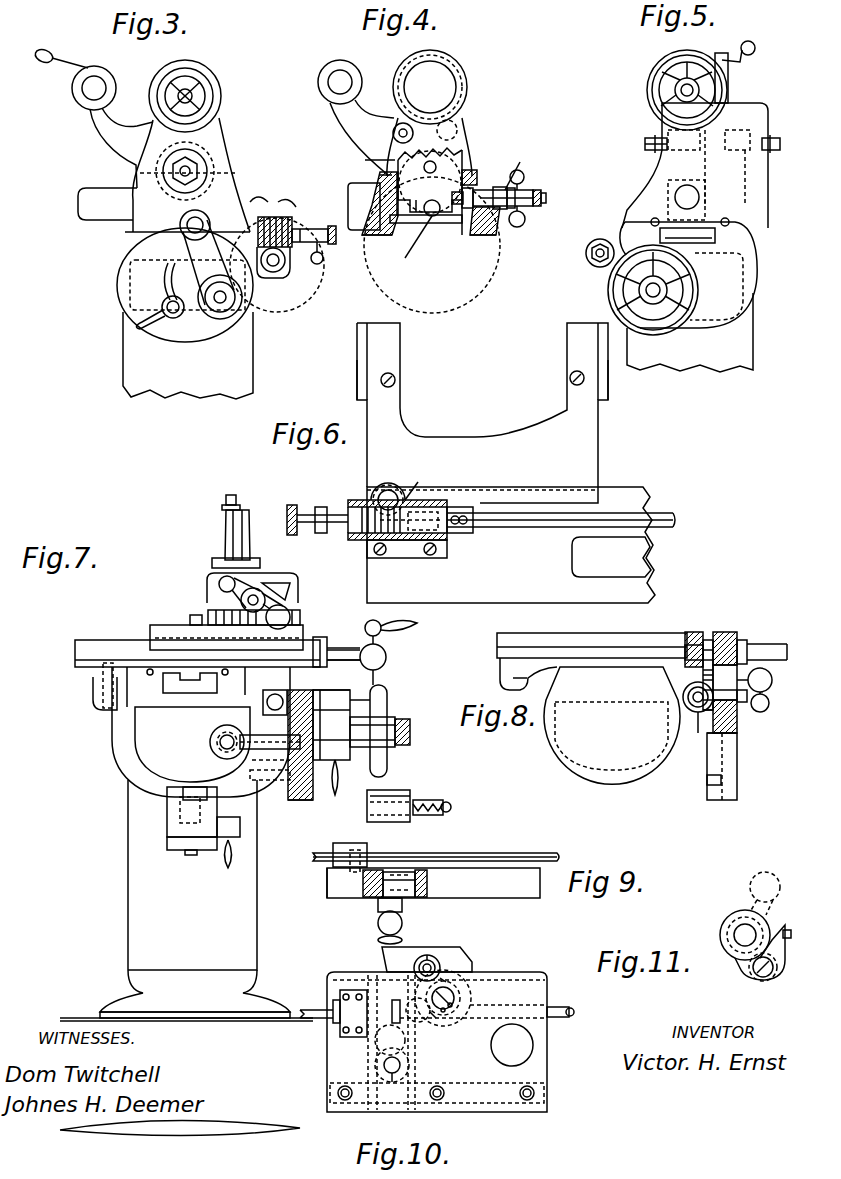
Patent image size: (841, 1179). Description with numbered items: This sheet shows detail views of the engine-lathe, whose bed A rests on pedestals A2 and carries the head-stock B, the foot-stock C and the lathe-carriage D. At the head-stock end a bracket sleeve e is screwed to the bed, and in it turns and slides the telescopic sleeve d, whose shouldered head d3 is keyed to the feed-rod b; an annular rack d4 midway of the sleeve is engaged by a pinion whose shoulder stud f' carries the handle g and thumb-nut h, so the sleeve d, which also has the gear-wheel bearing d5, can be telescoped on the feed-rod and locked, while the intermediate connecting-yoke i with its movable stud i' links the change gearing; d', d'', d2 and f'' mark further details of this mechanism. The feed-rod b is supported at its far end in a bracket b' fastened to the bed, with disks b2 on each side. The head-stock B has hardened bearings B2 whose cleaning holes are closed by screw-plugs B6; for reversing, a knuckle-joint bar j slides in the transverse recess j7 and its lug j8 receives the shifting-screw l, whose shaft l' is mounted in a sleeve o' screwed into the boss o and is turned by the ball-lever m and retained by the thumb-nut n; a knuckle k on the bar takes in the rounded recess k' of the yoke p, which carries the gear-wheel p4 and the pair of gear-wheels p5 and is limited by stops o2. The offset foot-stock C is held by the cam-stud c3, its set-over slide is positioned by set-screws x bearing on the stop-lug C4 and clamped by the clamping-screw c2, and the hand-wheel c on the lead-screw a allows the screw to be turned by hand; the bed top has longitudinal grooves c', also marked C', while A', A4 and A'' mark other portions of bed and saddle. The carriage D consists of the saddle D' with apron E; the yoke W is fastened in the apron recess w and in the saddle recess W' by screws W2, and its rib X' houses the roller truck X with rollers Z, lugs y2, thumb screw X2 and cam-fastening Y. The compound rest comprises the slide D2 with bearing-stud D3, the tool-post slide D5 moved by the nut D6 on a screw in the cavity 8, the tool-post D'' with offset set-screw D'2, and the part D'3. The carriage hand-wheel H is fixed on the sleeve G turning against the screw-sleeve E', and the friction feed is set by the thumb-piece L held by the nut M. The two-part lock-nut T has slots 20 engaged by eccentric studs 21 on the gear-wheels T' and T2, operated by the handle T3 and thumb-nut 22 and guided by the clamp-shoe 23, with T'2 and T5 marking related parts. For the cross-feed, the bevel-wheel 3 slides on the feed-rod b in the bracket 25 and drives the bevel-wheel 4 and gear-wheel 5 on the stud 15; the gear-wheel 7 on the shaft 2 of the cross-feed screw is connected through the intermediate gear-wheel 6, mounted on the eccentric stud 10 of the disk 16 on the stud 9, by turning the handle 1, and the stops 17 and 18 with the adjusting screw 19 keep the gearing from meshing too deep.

In FIG. 3, the head-stock B is at (226, 142).
In FIG. 4, the head-stock B is at (462, 132).
In FIG. 6, the head-stock B is at (482, 413).
In FIG. 8, the head-stock B is at (695, 632).
In FIG. 3, the bed A is at (185, 313).
In FIG. 5, the bed A is at (688, 297).
In FIG. 6, the bed A is at (511, 545).
In FIG. 7, the bed A is at (201, 732).
In FIG. 8, the bed A is at (612, 725).
In FIG. 3, the movable stud i' is at (190, 253).
In FIG. 3, the adjustable intermediate connecting-yoke i is at (189, 296).
In FIG. 3, the bracket sleeve e is at (277, 255).
In FIG. 6, the bracket sleeve e is at (407, 548).
In FIG. 3, the feed-rod b is at (280, 269).
In FIG. 6, the feed-rod b is at (563, 506).
In FIG. 8, the feed-rod b is at (689, 738).
In FIG. 9, the feed-rod b is at (436, 843).
In FIG. 10, the feed-rod b is at (437, 1000).
In FIG. 3, the shoulder-bearing stud f' is at (259, 193).
In FIG. 3, the pawl f'' is at (286, 192).
In FIG. 3, the handle g is at (312, 229).
In FIG. 3, the thumb-nut h is at (324, 232).
In FIG. 4, the screw-plug B6 is at (462, 72).
In FIG. 6, the screw-plug B6 is at (396, 380).
In FIG. 4, the knuckle-joint bar j is at (405, 225).
In FIG. 4, the transverse recess j7 is at (372, 228).
In FIG. 4, the arm or lug j8 is at (478, 232).
In FIG. 4, the yoke p is at (430, 182).
In FIG. 4, the gear-wheels p5 is at (390, 130).
In FIG. 4, the gear-wheel p4 is at (369, 154).
In FIG. 4, the stop o2 is at (476, 158).
In FIG. 4, the shifting-screw l is at (492, 175).
In FIG. 4, the shaft of screw l' is at (516, 163).
In FIG. 4, the ball-lever m is at (524, 176).
In FIG. 4, the thumb-nut n is at (546, 196).
In FIG. 4, the boss o is at (507, 185).
In FIG. 4, the sleeve o' is at (512, 219).
In FIG. 4, the knuckle k is at (417, 245).
In FIG. 4, the transverse recess k' is at (401, 238).
In FIG. 4, the anti-friction bearings B2 is at (358, 320).
In FIG. 6, the anti-friction bearings B2 is at (358, 326).
In FIG. 5, the cam-stud c3 is at (701, 85).
In FIG. 5, the foot-stock C is at (695, 165).
In FIG. 5, the stop-lug C4 is at (700, 165).
In FIG. 5, the set-screws x is at (711, 134).
In FIG. 5, the longitudinal grooves c' is at (689, 212).
In FIG. 5, the clamping-screw c2 is at (687, 233).
In FIG. 5, the hand-wheel c is at (642, 290).
In FIG. 5, the bracket b' is at (589, 252).
In FIG. 6, the bed A' is at (611, 557).
In FIG. 7, the bed A' is at (343, 639).
In FIG. 8, the bed A' is at (755, 637).
In FIG. 6, the annular rack d4 is at (358, 500).
In FIG. 6, the telescopic sleeve d is at (331, 533).
In FIG. 6, the gear-wheel bearing d5 is at (312, 510).
In FIG. 6, the roller d'' is at (388, 487).
In FIG. 6, the cap d' is at (417, 481).
In FIG. 6, the shouldered head d3 is at (470, 533).
In FIG. 6, the slot d2 is at (430, 530).
In FIG. 7, the offset set-screw D'2 is at (212, 497).
In FIG. 7, the tool-post D'' is at (223, 535).
In FIG. 7, the tool-post slide D5 is at (213, 578).
In FIG. 7, the nut D6 is at (298, 590).
In FIG. 7, the sleeve G is at (300, 615).
In FIG. 7, the bearing-stud D3 is at (188, 610).
In FIG. 7, the slide D2 is at (150, 632).
In FIG. 7, the slide D'3 is at (197, 636).
In FIG. 7, the saddle D' is at (183, 652).
In FIG. 8, the saddle D' is at (578, 645).
In FIG. 10, the saddle D' is at (455, 957).
In FIG. 7, the screws W2 is at (103, 668).
In FIG. 7, the recess W' is at (72, 693).
In FIG. 8, the recess W' is at (509, 675).
In FIG. 7, the rib A4 is at (128, 683).
In FIG. 7, the longitudinal grooves C' is at (192, 674).
In FIG. 7, the rib A'' is at (254, 678).
In FIG. 7, the disks b2 is at (263, 702).
In FIG. 7, the lock-nut T is at (239, 740).
In FIG. 7, the transverse recess 20 is at (265, 768).
In FIG. 9, the transverse recess 20 is at (395, 870).
In FIG. 7, the eccentric studs 21 is at (271, 766).
In FIG. 9, the eccentric studs 21 is at (420, 870).
In FIG. 7, the yoke W is at (166, 844).
In FIG. 7, the rollers Z is at (207, 795).
In FIG. 7, the pedestals A2 is at (186, 900).
In FIG. 7, the truck X is at (177, 812).
In FIG. 7, the rib X' is at (174, 821).
In FIG. 7, the screw X2 is at (183, 852).
In FIG. 7, the cam-fastening Y is at (233, 827).
In FIG. 7, the lugs y2 is at (218, 858).
In FIG. 7, the bearing T'2 is at (313, 757).
In FIG. 7, the apron E is at (309, 756).
In FIG. 8, the apron E is at (732, 734).
In FIG. 9, the apron E is at (433, 883).
In FIG. 10, the apron E is at (450, 1042).
In FIG. 7, the lathe-carriage D is at (300, 808).
In FIG. 8, the lathe-carriage D is at (737, 766).
In FIG. 7, the gear-wheel T' is at (331, 677).
In FIG. 9, the gear-wheel T' is at (386, 854).
In FIG. 10, the gear-wheel T' is at (375, 1040).
In FIG. 7, the screw-sleeve E' is at (352, 692).
In FIG. 7, the hand-wheel H is at (387, 700).
In FIG. 7, the thumb-piece L is at (387, 760).
In FIG. 7, the nut M is at (410, 730).
In FIG. 7, the handle T3 is at (340, 770).
In FIG. 9, the handle T3 is at (378, 930).
In FIG. 8, the gear-wheel 7 is at (720, 632).
In FIG. 8, the shaft 2 is at (787, 650).
In FIG. 10, the shaft 2 is at (414, 965).
In FIG. 8, the handle 1 is at (772, 677).
In FIG. 11, the handle 1 is at (770, 880).
In FIG. 8, the stud 15 is at (765, 711).
In FIG. 8, the bevel-wheel 3 is at (695, 712).
In FIG. 10, the bevel-wheel 3 is at (392, 1002).
In FIG. 8, the intermediate gear-wheel 6 is at (707, 676).
In FIG. 10, the intermediate gear-wheel 6 is at (434, 1018).
In FIG. 8, the stud 9 is at (725, 681).
In FIG. 10, the stud 9 is at (450, 1003).
In FIG. 11, the stud 9 is at (740, 928).
In FIG. 8, the bevel-wheel 4 is at (703, 710).
In FIG. 10, the bevel-wheel 4 is at (430, 958).
In FIG. 8, the gear-wheel 5 is at (745, 702).
In FIG. 10, the gear-wheel 5 is at (418, 1019).
In FIG. 8, the recess w is at (707, 782).
In FIG. 9, the lead-screw a is at (448, 805).
In FIG. 9, the bracket bearing 25 is at (345, 843).
In FIG. 9, the clamp-shoe 23 is at (333, 870).
In FIG. 9, the thumb-nut 22 is at (404, 940).
In FIG. 10, the cavity 8 is at (443, 980).
In FIG. 10, the eccentric stud-bearing 10 is at (440, 1010).
In FIG. 10, the disk 16 is at (450, 1005).
In FIG. 10, the gear-wheel T2 is at (380, 1065).
In FIG. 10, the bearing T5 is at (392, 1086).
In FIG. 11, the stop 17 is at (735, 912).
In FIG. 11, the adjustable stop 18 is at (775, 965).
In FIG. 11, the screw 19 is at (789, 930).